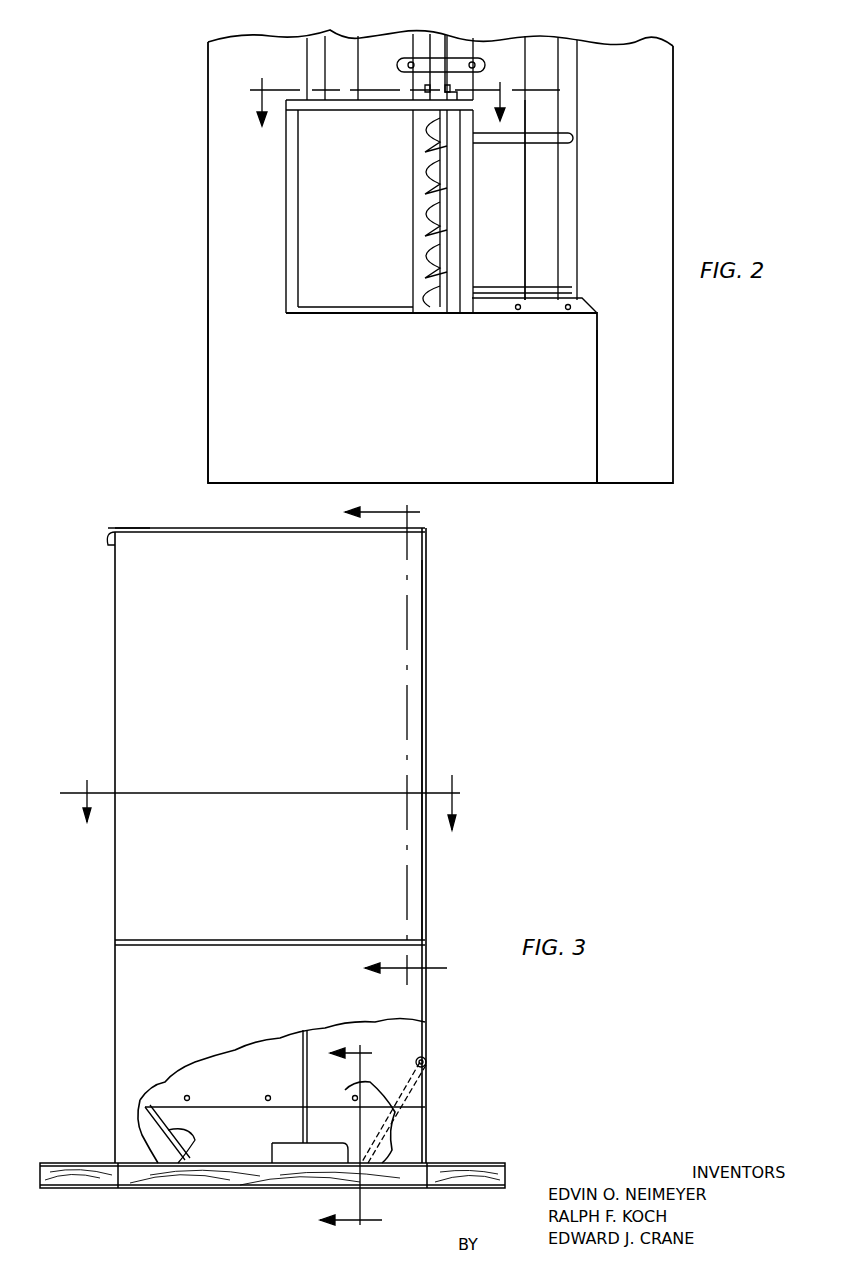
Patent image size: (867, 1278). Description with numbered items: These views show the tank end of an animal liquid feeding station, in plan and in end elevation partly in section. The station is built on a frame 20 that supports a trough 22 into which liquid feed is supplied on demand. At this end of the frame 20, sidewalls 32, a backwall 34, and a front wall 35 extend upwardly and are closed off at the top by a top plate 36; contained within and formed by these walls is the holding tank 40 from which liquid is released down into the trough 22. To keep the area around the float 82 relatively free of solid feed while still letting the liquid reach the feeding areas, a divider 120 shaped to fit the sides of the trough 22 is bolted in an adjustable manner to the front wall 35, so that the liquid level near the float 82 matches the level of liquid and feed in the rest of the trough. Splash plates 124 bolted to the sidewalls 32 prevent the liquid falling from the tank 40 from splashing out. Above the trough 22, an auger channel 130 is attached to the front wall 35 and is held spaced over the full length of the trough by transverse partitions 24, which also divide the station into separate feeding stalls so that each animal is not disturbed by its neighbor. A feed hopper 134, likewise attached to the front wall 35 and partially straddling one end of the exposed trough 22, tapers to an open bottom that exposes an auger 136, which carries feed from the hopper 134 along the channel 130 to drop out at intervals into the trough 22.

In FIG. 3, the frame 20 is at (478, 1157).
In FIG. 2, the trough 22 is at (540, 198).
In FIG. 3, the trough 22 is at (180, 1162).
In FIG. 2, the partitions 24 is at (545, 288).
In FIG. 2, the sidewalls 32 is at (598, 413).
In FIG. 2, the backwall 34 is at (548, 483).
In FIG. 3, the backwall 34 is at (385, 702).
In FIG. 2, the front wall 35 is at (547, 312).
In FIG. 2, the top plate 36 is at (582, 467).
In FIG. 3, the top plate 36 is at (147, 527).
In FIG. 2, the holding tank 40 is at (563, 363).
In FIG. 3, the holding tank 40 is at (150, 693).
In FIG. 3, the float 82 is at (407, 1133).
In FIG. 3, the divider 120 is at (235, 1140).
In FIG. 3, the splash plates 124 is at (390, 1070).
In FIG. 2, the auger channel 130 is at (455, 45).
In FIG. 2, the feed hopper 134 is at (285, 197).
In FIG. 2, the auger 136 is at (433, 229).